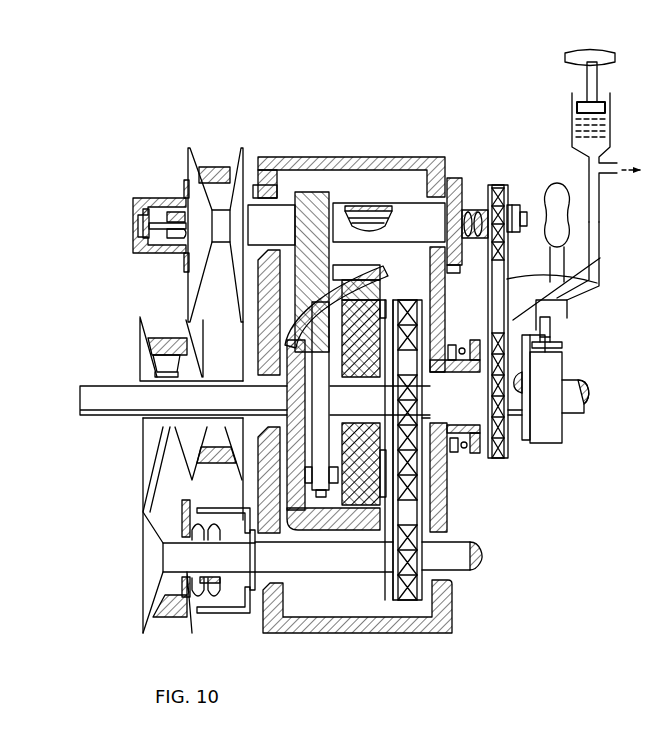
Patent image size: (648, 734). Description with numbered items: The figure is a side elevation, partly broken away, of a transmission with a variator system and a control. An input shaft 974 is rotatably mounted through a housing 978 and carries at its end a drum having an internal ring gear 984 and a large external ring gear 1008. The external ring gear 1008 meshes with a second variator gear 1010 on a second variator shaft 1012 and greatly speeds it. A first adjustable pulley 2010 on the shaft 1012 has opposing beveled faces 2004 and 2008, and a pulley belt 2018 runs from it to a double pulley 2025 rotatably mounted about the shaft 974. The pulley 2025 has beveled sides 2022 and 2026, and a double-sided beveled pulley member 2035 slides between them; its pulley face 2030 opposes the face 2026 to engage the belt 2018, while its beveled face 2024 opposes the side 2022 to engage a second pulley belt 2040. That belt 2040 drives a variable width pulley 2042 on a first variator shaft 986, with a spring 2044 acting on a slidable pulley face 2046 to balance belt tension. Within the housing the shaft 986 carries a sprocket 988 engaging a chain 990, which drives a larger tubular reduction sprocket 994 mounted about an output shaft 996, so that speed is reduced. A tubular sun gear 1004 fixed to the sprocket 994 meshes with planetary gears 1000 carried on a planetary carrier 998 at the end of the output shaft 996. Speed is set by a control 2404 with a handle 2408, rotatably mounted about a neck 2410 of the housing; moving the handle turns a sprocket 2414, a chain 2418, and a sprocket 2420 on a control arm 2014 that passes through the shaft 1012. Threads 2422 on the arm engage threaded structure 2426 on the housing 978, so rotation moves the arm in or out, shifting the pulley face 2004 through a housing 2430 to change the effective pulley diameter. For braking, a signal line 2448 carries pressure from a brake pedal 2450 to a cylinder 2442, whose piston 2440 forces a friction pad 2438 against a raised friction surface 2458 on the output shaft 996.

The input shaft 974 is at (90, 398).
The housing 978 is at (447, 597).
The internal ring gear 984 is at (368, 502).
The first variator shaft 986 is at (283, 562).
The sprocket 988 is at (415, 570).
The chain 990 is at (409, 601).
The tubular reduction sprocket 994 is at (432, 418).
The output shaft 996 is at (588, 390).
The planetary carrier 998 is at (322, 490).
The planetary gears 1000 is at (378, 291).
The tubular sun gear 1004 is at (362, 427).
The external ring gear 1008 is at (231, 179).
The second variator gear 1010 is at (320, 222).
The second variator shaft 1012 is at (289, 229).
The beveled pulley face 2004 is at (186, 175).
The beveled pulley face 2008 is at (242, 149).
The first adjustable pulley 2010 is at (187, 149).
The control arm 2014 is at (138, 213).
The pulley belt 2018 is at (213, 287).
The beveled side 2022 is at (160, 449).
The beveled face 2024 is at (157, 372).
The double pulley 2025 is at (139, 319).
The beveled side 2026 is at (215, 462).
The pulley face 2030 is at (150, 343).
The double-sided beveled pulley member 2035 is at (186, 332).
The pulley belt 2040 is at (166, 488).
The variable width pulley 2042 is at (139, 542).
The spring 2044 is at (213, 518).
The pulley face 2046 is at (177, 597).
The control 2404 is at (517, 446).
The handle 2408 is at (562, 260).
The neck 2410 is at (468, 453).
The sprocket 2414 is at (490, 372).
The chain 2418 is at (596, 282).
The sprocket 2420 is at (507, 188).
The threads 2422 is at (478, 196).
The threaded structure 2426 is at (467, 198).
The housing 2430 is at (136, 247).
The friction pad 2438 is at (548, 346).
The piston 2440 is at (550, 328).
The cylinder 2442 is at (545, 308).
The signal line 2448 is at (593, 213).
The brake pedal 2450 is at (612, 46).
The raised friction surface 2458 is at (550, 417).